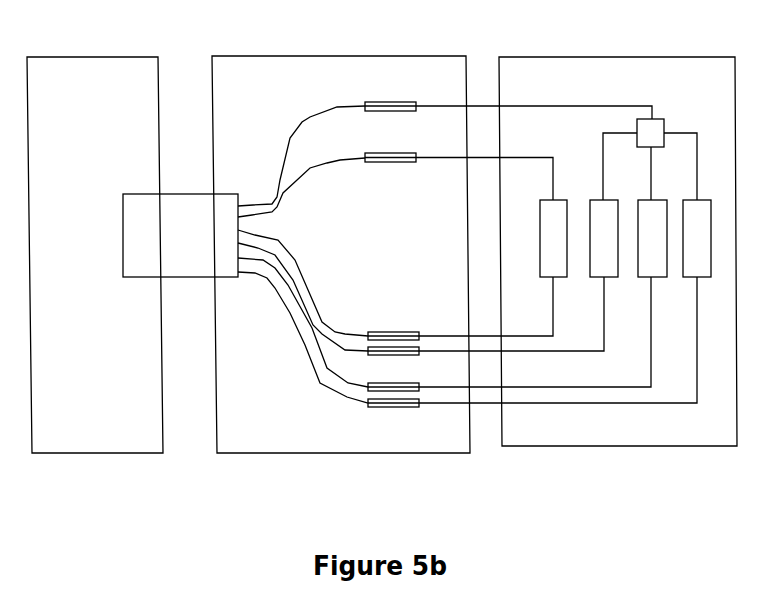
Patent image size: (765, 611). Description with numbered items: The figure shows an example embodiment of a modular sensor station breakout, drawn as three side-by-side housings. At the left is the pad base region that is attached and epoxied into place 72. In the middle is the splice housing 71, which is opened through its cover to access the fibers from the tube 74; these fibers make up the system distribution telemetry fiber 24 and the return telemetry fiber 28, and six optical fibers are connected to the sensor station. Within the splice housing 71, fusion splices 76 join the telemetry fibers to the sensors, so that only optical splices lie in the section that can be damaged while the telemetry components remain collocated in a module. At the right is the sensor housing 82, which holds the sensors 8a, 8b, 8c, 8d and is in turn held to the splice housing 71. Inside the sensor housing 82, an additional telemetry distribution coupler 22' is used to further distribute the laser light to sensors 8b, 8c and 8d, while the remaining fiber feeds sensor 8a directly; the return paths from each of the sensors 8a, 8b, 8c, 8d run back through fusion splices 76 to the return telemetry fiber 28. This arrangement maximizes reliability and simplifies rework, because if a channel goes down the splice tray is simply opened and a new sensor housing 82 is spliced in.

The epoxied place 72 is at (80, 457).
The splice housing 71 is at (273, 455).
The sensor housing 82 is at (698, 447).
The tube 74 is at (147, 193).
The distribution telemetry fiber 24 is at (280, 203).
The return telemetry fiber 28 is at (298, 265).
The fusion splices 76 is at (391, 102).
The additional telemetry distribution coupler 22' is at (665, 137).
The sensor 8a is at (553, 238).
The sensor 8b is at (604, 238).
The sensor 8c is at (652, 238).
The sensor 8d is at (697, 238).